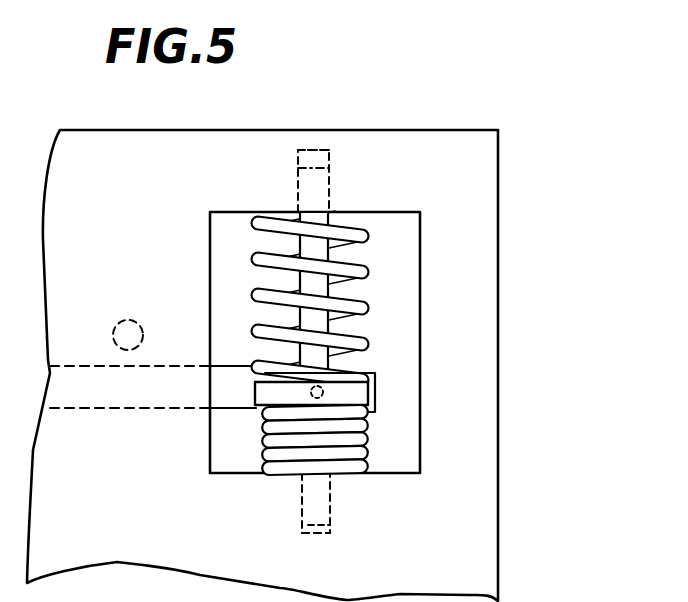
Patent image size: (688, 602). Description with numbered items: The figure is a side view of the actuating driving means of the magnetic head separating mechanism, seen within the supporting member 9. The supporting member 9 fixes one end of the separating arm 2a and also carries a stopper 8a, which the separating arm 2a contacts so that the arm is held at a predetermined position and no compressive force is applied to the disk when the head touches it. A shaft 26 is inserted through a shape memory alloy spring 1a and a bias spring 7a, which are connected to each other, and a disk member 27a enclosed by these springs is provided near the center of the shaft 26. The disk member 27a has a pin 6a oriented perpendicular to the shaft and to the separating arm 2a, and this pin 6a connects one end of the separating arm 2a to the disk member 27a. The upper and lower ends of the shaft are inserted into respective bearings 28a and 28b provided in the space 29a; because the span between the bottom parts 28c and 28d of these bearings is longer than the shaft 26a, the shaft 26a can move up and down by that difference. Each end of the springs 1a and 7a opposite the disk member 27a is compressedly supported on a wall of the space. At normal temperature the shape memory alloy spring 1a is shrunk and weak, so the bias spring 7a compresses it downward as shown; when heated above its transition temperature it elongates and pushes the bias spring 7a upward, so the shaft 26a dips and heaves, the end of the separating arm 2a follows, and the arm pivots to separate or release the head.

The supporting member 9 is at (488, 157).
The space 29a is at (418, 240).
The separating arm 2a is at (93, 410).
The stopper 8a is at (115, 328).
The bearing 28a is at (332, 157).
The bottom part of bearing 28c is at (302, 148).
The shaft 26 is at (293, 168).
The bearing 28b is at (335, 528).
The bottom part of bearing 28d is at (309, 538).
The bias spring 7a is at (259, 279).
The shaft 26a is at (290, 278).
The disk member 27a is at (258, 390).
The pin 6a is at (324, 391).
The shape memory alloy spring 1a is at (268, 457).